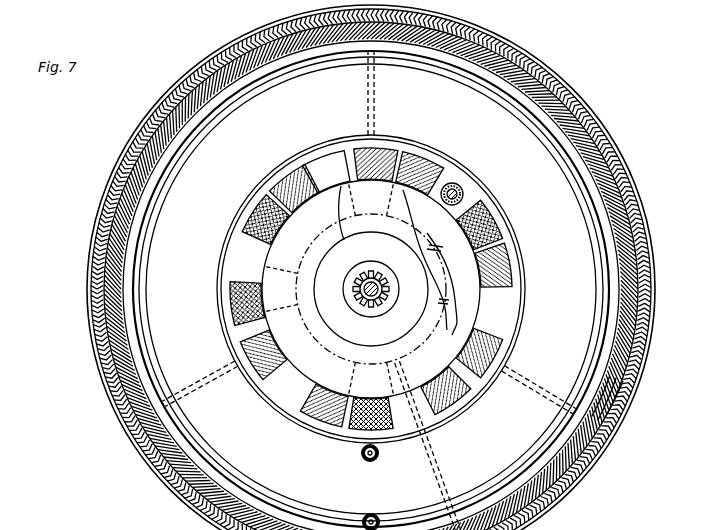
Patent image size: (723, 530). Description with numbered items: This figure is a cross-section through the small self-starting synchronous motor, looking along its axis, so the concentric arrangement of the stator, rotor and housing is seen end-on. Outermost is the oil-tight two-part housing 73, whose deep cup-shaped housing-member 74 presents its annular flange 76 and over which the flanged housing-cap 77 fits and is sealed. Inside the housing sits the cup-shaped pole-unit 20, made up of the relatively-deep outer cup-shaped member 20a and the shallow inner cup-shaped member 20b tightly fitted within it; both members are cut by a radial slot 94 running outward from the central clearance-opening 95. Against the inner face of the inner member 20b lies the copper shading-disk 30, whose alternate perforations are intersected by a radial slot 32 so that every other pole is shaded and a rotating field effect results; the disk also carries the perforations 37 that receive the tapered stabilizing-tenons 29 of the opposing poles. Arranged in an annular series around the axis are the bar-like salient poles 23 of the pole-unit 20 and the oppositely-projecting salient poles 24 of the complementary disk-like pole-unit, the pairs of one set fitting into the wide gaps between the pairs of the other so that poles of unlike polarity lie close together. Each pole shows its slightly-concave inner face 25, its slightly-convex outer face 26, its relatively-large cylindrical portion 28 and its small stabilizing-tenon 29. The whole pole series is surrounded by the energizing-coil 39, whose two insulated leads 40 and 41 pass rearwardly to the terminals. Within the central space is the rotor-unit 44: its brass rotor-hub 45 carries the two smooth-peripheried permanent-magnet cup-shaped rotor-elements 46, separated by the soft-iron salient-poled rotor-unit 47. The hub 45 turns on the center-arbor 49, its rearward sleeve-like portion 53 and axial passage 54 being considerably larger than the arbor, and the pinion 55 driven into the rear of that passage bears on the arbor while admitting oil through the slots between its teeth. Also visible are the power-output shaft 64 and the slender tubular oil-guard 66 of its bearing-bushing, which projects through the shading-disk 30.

The cup-shaped pole-unit 20 is at (620, 361).
The outer cup-shaped member 20a is at (624, 385).
The inner cup-shaped member 20b is at (619, 412).
The salient poles 23 is at (362, 149).
The salient poles 24 is at (432, 160).
The concave inner face 25 is at (338, 378).
The convex outer face 26 is at (350, 420).
The cylindrical portion 28 is at (482, 212).
The stabilizing-tenon 29 is at (496, 224).
The shading-disk 30 is at (132, 299).
The radial slot 32 is at (377, 92).
The perforation 37 is at (262, 207).
The energizing-coil 39 is at (632, 249).
The insulated lead 40 is at (373, 462).
The insulated lead 41 is at (371, 514).
The rotor-unit 44 is at (328, 172).
The rotor-hub 45 is at (368, 233).
The cup-shaped rotor-elements 46 is at (298, 372).
The salient-poled rotor-unit 47 is at (438, 296).
The center-arbor 49 is at (369, 300).
The sleeve-like portion 53 is at (358, 305).
The axial passage 54 is at (378, 274).
The pinion 55 is at (354, 296).
The power-output shaft 64 is at (459, 185).
The oil-guard 66 is at (466, 198).
The housing 73 is at (613, 157).
The cup-shaped housing-member 74 is at (577, 480).
The annular flange 76 is at (583, 463).
The housing-cap 77 is at (546, 509).
The slot 94 is at (446, 480).
The central clearance-opening 95 is at (380, 362).